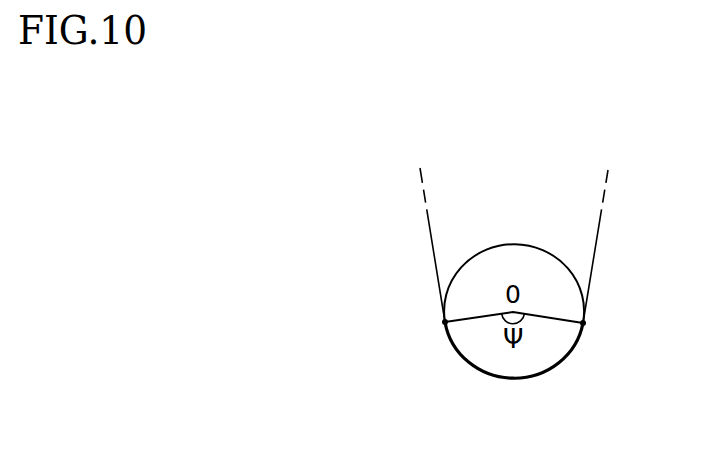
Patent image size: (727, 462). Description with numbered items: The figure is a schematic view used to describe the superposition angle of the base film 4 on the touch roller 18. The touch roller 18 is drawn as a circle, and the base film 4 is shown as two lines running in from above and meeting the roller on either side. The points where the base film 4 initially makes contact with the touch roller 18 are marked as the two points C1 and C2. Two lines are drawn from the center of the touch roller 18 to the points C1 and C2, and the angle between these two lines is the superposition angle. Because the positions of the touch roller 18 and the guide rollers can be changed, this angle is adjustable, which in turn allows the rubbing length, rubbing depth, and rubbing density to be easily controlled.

The touch roller 18 is at (517, 253).
The base film 4 is at (598, 237).
The contact point C1 is at (429, 325).
The contact point C2 is at (601, 325).